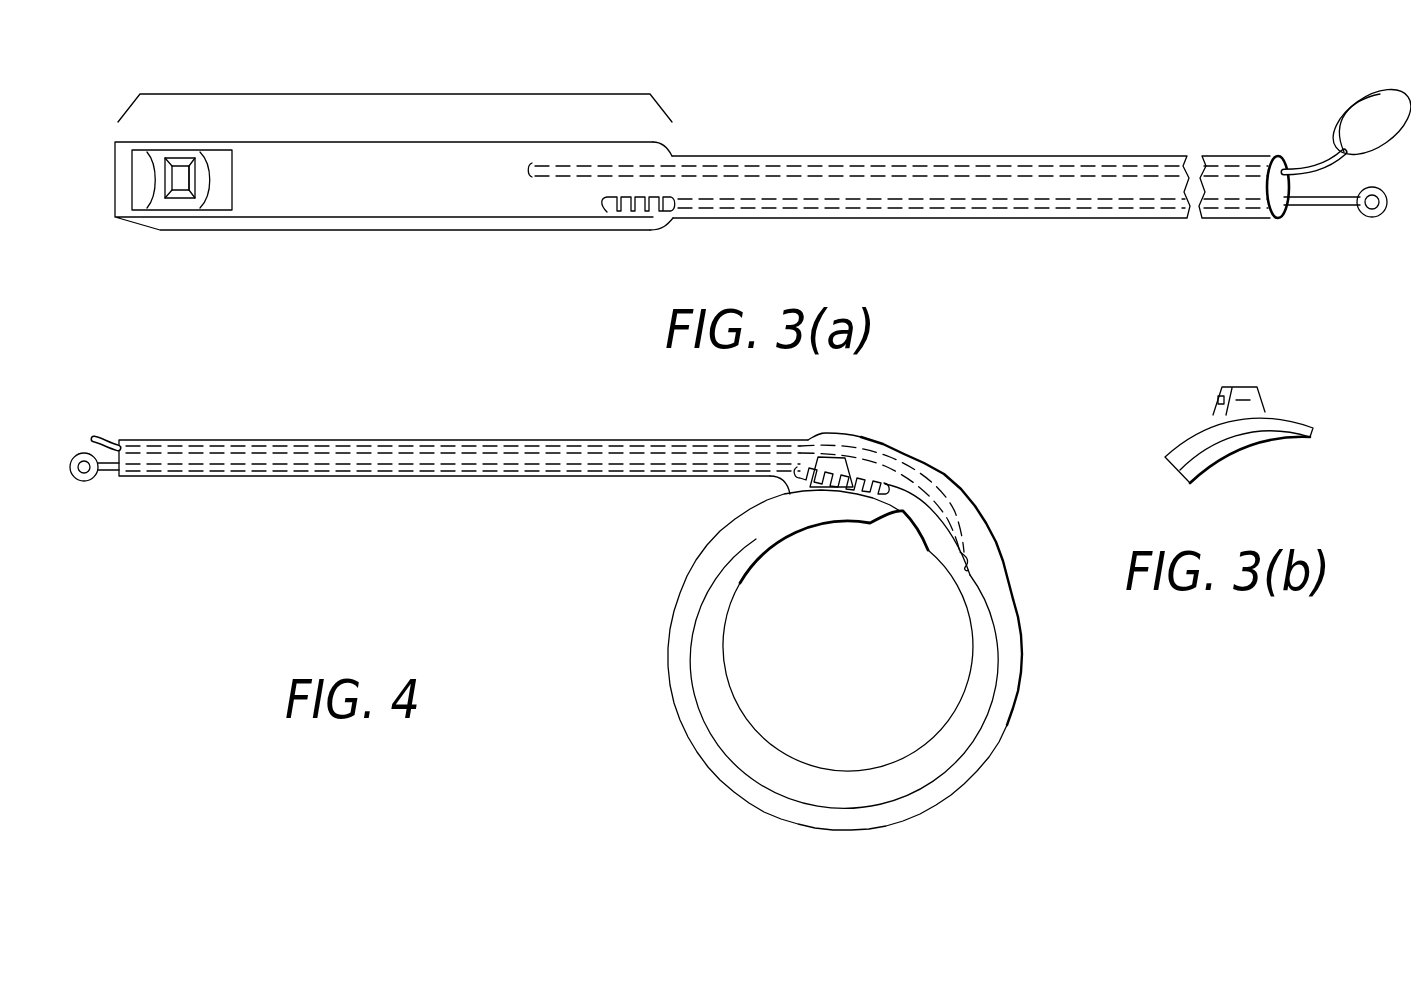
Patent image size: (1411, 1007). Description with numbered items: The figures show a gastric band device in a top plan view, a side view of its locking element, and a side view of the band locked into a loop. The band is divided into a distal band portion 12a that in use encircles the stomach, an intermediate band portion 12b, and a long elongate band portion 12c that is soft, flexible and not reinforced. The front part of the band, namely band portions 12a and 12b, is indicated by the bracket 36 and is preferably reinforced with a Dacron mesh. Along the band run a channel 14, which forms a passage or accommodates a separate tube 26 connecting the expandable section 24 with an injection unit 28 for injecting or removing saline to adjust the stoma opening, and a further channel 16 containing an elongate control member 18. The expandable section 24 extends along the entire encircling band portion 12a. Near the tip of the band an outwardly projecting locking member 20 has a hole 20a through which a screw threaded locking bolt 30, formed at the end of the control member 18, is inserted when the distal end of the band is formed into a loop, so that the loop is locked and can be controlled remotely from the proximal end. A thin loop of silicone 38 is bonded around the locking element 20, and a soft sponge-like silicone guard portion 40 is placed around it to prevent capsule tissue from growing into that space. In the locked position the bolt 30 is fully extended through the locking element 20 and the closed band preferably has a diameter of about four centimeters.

In FIG. 3A, the band portion 12a is at (455, 232).
In FIG. 3B, the band portion 12a is at (1180, 460).
In FIG. 4, the band portion 12a is at (984, 785).
In FIG. 3A, the intermediate band portion 12b is at (668, 222).
In FIG. 4, the intermediate band portion 12b is at (882, 444).
In FIG. 3A, the elongate band portion 12c is at (1075, 158).
In FIG. 4, the elongate band portion 12c is at (443, 478).
In FIG. 3A, the channel 14 is at (893, 160).
In FIG. 4, the channel 14 is at (565, 440).
In FIG. 3A, the channel 16 is at (815, 204).
In FIG. 4, the channel 16 is at (568, 474).
In FIG. 4, the control member 18 is at (108, 473).
In FIG. 3A, the locking member 20 is at (179, 200).
In FIG. 3B, the locking member 20 is at (1240, 386).
In FIG. 4, the locking member 20 is at (838, 456).
In FIG. 3A, the hole 20a is at (200, 165).
In FIG. 3B, the hole 20a is at (1215, 400).
In FIG. 3B, the expandable section 24 is at (1222, 460).
In FIG. 4, the expandable section 24 is at (760, 765).
In FIG. 3A, the tube 26 is at (1308, 166).
In FIG. 4, the tube 26 is at (120, 446).
In FIG. 3A, the injection unit 28 is at (1345, 110).
In FIG. 3A, the locking bolt 30 is at (631, 214).
In FIG. 4, the locking bolt 30 is at (890, 486).
In FIG. 3A, the bracket 36 is at (361, 91).
In FIG. 3A, the loop of silicone 38 is at (205, 190).
In FIG. 3A, the guard portion 40 is at (130, 180).
In FIG. 3B, the guard portion 40 is at (1180, 442).